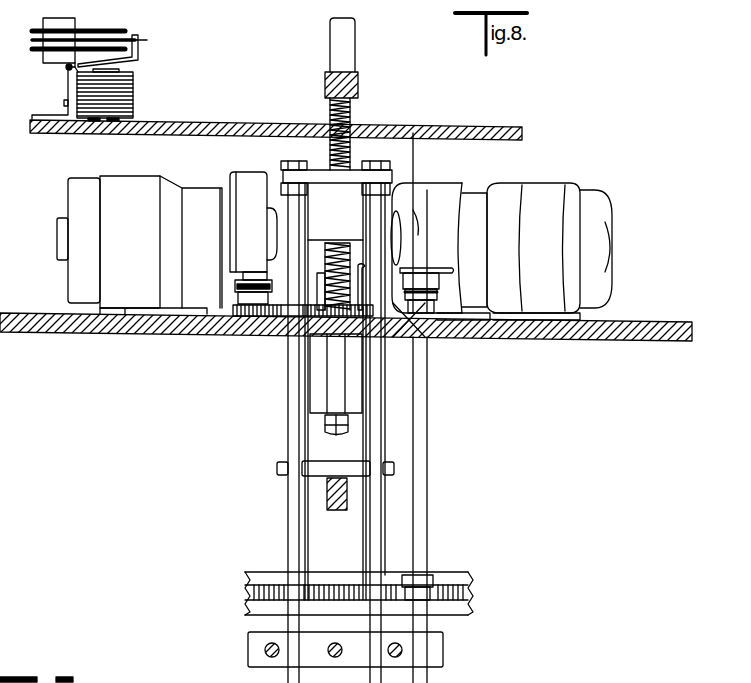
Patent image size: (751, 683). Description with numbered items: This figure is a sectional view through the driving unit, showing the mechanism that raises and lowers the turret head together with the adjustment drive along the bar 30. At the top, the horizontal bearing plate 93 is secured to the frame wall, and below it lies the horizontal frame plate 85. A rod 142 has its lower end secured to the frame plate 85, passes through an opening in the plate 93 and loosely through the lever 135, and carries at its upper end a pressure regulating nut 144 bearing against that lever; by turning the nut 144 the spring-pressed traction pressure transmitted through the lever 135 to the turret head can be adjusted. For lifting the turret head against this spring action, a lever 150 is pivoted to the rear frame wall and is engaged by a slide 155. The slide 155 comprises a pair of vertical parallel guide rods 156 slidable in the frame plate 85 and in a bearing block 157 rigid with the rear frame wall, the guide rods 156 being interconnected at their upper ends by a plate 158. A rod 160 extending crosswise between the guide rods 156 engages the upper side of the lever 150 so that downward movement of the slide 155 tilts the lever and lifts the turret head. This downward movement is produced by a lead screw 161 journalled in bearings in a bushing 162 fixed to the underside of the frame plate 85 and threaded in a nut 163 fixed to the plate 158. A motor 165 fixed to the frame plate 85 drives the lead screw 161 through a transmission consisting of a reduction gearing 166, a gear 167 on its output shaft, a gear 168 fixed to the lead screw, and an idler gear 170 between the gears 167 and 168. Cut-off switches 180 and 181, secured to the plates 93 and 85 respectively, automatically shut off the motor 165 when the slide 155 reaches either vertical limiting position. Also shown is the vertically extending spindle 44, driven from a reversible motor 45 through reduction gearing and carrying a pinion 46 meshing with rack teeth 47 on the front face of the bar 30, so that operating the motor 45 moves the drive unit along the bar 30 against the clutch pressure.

The bar 30 is at (468, 572).
The spindle 44 is at (420, 487).
The reversible motor 45 is at (590, 206).
The pinion 46 is at (433, 603).
The rack teeth 47 is at (470, 595).
The frame plate 85 is at (640, 341).
The bearing plate 93 is at (522, 133).
The lever 135 is at (325, 77).
The rod 142 is at (328, 100).
The pressure regulating nut 144 is at (328, 31).
The lever 150 is at (337, 510).
The slide 155 is at (280, 514).
The guide rods 156 is at (288, 543).
The bearing block 157 is at (437, 656).
The plate 158 is at (412, 180).
The rod 160 is at (337, 474).
The lead screw 161 is at (335, 322).
The bushing 162 is at (315, 390).
The nut 163 is at (347, 193).
The motor 165 is at (125, 188).
The reduction gearing 166 is at (242, 182).
The gear 167 is at (230, 316).
The gear 168 is at (298, 327).
The idler gear 170 is at (290, 322).
The cut-off switch 180 is at (413, 150).
The cut-off switch 181 is at (423, 340).